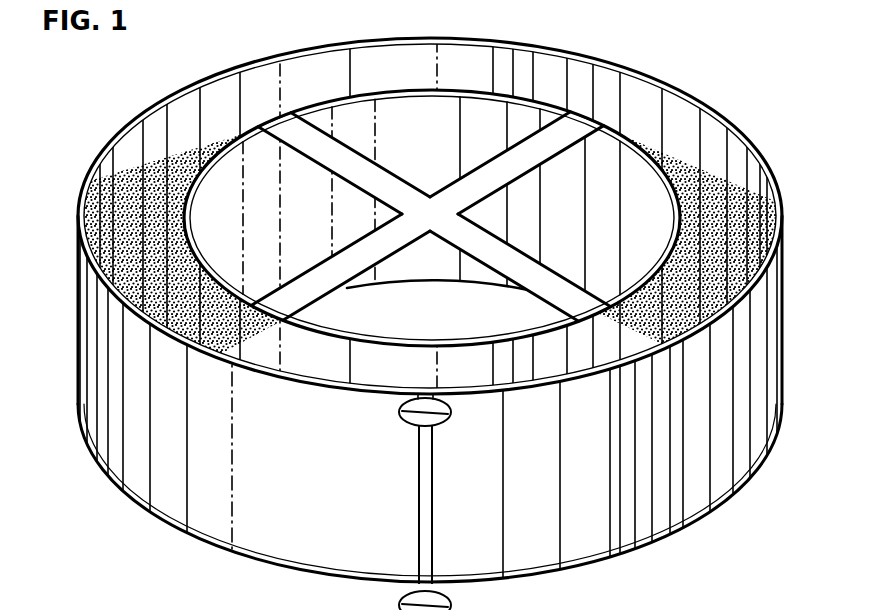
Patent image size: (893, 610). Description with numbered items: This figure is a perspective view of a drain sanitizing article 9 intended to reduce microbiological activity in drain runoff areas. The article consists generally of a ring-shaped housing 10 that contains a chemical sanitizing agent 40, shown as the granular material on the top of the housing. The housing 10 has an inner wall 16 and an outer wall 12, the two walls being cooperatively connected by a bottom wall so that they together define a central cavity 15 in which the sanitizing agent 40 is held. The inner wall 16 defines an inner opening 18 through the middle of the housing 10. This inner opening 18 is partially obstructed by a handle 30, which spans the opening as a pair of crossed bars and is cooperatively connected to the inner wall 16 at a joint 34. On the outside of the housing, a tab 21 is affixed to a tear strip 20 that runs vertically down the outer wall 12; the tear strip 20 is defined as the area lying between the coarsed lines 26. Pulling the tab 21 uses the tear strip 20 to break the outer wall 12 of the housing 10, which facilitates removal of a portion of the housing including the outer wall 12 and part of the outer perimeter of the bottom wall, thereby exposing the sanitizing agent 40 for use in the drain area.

The drain sanitizing article 9 is at (770, 112).
The housing 10 is at (158, 100).
The outer wall 12 is at (160, 463).
The central cavity 15 is at (497, 78).
The inner wall 16 is at (429, 145).
The inner opening 18 is at (263, 187).
The tear strip 20 is at (425, 479).
The tab 21 is at (448, 418).
The coarsed lines 26 is at (433, 522).
The handle 30 is at (515, 253).
The joint 34 is at (284, 110).
The chemical sanitizing agent 40 is at (128, 235).